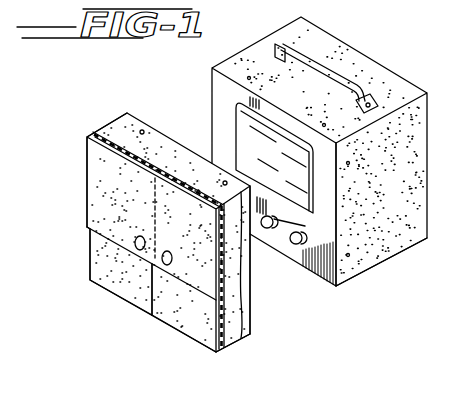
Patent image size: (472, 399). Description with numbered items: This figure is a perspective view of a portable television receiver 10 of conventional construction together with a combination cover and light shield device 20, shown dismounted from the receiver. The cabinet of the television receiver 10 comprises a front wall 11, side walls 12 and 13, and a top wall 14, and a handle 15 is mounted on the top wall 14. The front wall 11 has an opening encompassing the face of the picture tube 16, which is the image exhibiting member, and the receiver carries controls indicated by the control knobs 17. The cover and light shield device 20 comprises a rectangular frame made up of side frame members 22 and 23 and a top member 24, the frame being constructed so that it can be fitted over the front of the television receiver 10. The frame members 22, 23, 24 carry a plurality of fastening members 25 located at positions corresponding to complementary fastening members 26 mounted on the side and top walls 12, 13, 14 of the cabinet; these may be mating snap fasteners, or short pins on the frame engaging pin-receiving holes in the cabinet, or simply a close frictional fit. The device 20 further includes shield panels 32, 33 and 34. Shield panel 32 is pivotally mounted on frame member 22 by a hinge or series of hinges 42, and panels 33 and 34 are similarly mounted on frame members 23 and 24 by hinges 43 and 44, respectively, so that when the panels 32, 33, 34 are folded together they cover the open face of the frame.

The television receiver 10 is at (366, 44).
The front wall 11 is at (323, 267).
The side wall 12 is at (239, 56).
The side wall 13 is at (398, 242).
The top wall 14 is at (397, 88).
The handle 15 is at (314, 62).
The picture tube 16 is at (350, 209).
The control knobs 17 is at (295, 234).
The cover and light shield device 20 is at (238, 340).
The side frame member 22 is at (90, 172).
The side frame member 23 is at (249, 284).
The top member 24 is at (157, 138).
The fastening members 25 is at (214, 176).
The complementary fastening members 26 is at (324, 124).
The shield panel 32 is at (107, 279).
The shield panel 33 is at (172, 318).
The shield panel 34 is at (192, 243).
The hinge 42 is at (87, 206).
The hinges 43 is at (233, 345).
The hinges 44 is at (125, 155).